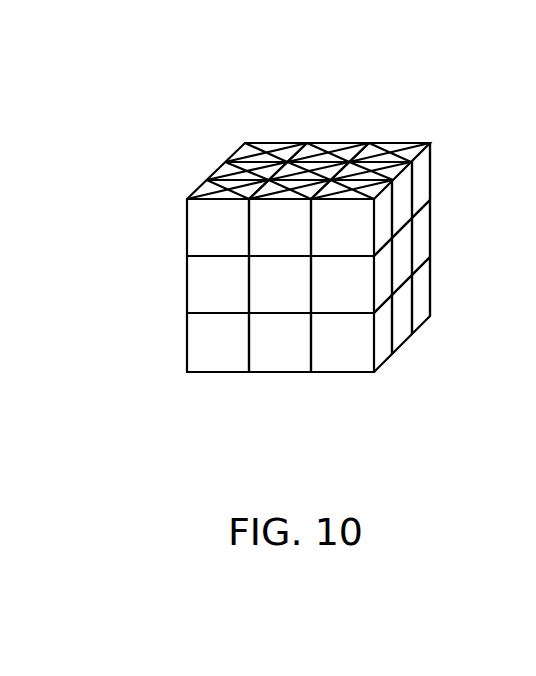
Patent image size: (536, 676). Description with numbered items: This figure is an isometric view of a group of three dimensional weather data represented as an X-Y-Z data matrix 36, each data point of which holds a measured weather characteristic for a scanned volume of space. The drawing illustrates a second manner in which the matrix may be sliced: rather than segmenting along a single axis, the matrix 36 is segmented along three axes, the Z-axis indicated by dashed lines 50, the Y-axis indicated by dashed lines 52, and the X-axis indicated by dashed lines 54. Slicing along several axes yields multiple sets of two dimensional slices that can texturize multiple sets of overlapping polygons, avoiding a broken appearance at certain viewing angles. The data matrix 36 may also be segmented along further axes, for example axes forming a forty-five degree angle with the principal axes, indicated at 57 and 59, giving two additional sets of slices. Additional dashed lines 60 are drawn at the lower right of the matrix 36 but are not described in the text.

The X-Y-Z data matrix 36 is at (187, 372).
The dashed lines indicating Z-axis segmentation 50 is at (225, 161).
The dashed lines indicating Y-axis segmentation 52 is at (432, 199).
The dashed lines indicating X-axis segmentation 54 is at (308, 142).
The fourth axis segmentation 57 is at (274, 146).
The fifth axis segmentation 59 is at (430, 143).
The side columns 60 is at (412, 335).